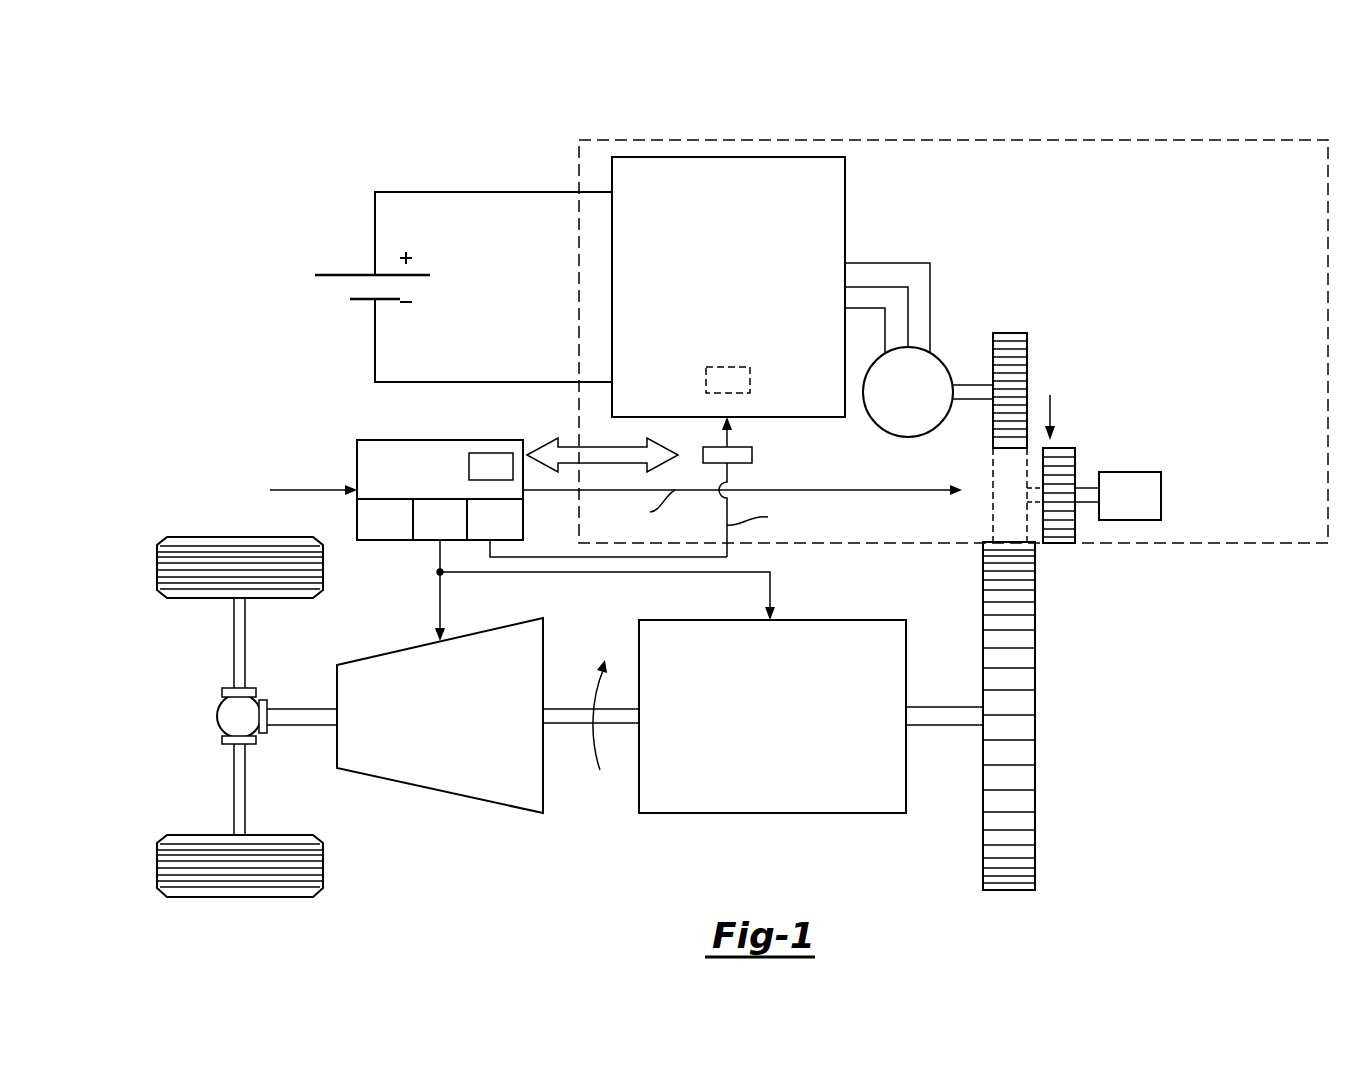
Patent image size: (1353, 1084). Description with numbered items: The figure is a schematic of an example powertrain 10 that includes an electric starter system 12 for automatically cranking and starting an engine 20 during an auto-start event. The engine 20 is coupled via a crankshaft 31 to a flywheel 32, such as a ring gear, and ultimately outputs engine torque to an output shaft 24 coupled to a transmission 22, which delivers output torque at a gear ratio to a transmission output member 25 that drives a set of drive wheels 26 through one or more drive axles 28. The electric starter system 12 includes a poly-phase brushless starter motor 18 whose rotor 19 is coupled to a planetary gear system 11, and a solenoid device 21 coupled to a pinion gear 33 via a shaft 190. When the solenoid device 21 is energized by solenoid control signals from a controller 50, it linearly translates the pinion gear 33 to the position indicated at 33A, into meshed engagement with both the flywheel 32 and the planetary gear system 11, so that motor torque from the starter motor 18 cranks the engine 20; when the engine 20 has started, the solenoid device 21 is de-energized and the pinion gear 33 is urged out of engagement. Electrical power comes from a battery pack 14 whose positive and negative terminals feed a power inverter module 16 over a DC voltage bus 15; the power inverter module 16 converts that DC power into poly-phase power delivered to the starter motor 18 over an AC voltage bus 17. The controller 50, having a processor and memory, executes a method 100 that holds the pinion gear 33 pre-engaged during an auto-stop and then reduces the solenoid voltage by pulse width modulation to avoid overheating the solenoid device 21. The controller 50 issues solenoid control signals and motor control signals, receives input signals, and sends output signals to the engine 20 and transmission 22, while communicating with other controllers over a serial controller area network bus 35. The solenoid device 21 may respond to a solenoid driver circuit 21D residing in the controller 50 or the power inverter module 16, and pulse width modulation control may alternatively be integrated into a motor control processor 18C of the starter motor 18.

The powertrain 10 is at (1241, 90).
The electric starter system 12 is at (985, 140).
The battery pack 14 is at (290, 287).
The DC voltage bus 15 is at (492, 192).
The power inverter module 16 is at (728, 157).
The AC voltage bus 17 is at (886, 263).
The starter motor 18 is at (940, 357).
The rotor 19 is at (978, 399).
The planetary gear system 11 is at (1027, 387).
The pinion gear engaged position 33A is at (992, 480).
The pinion gear 33 is at (1060, 543).
The shaft 190 is at (1088, 503).
The solenoid device 21 is at (1161, 495).
The solenoid driver circuit 21D is at (750, 385).
The motor control processor 18C is at (752, 455).
The controller 50 is at (397, 482).
The method 100 is at (432, 519).
The CAN bus 35 is at (565, 463).
The transmission 22 is at (445, 792).
The output shaft 24 is at (562, 723).
The engine 20 is at (770, 813).
The crankshaft 31 is at (943, 725).
The flywheel 32 is at (1035, 710).
The drive wheels 26 is at (157, 568).
The drive axles 28 is at (234, 643).
The transmission output member 25 is at (300, 725).